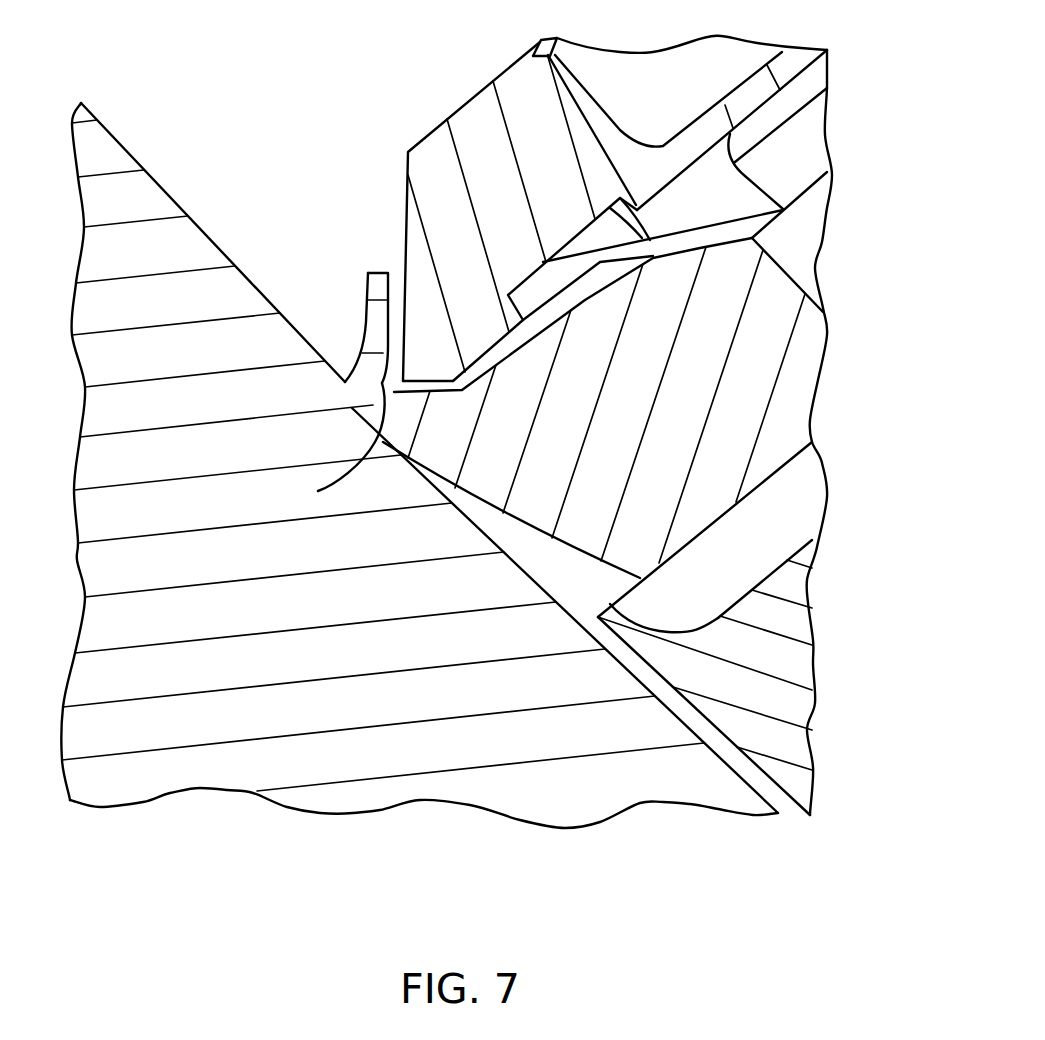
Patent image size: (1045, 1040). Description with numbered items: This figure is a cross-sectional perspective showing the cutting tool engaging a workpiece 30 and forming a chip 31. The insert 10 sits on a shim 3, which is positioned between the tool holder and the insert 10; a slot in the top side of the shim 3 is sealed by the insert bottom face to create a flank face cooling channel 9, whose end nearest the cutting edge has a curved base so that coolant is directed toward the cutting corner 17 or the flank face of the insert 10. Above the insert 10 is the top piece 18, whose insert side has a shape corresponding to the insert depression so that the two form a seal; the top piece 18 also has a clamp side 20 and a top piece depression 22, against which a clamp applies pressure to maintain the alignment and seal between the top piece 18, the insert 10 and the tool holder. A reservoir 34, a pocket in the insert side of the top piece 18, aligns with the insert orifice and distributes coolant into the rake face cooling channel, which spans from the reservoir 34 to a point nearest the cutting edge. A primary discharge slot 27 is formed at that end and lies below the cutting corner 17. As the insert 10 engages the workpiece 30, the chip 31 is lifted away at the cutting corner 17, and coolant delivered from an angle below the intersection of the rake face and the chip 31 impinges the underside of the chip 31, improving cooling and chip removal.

The shim 3 is at (766, 669).
The flank face cooling channel 9 is at (767, 515).
The insert 10 is at (639, 422).
The cutting corner 17 is at (375, 428).
The top piece 18 is at (511, 211).
The clamp side 20 is at (408, 152).
The top piece depression 22 is at (669, 104).
The primary discharge slot 27 is at (318, 491).
The workpiece 30 is at (298, 617).
The chip 31 is at (367, 293).
The reservoir 34 is at (797, 175).